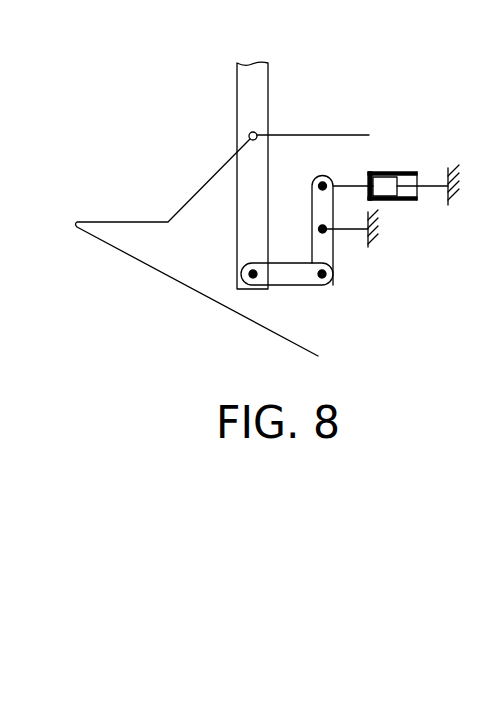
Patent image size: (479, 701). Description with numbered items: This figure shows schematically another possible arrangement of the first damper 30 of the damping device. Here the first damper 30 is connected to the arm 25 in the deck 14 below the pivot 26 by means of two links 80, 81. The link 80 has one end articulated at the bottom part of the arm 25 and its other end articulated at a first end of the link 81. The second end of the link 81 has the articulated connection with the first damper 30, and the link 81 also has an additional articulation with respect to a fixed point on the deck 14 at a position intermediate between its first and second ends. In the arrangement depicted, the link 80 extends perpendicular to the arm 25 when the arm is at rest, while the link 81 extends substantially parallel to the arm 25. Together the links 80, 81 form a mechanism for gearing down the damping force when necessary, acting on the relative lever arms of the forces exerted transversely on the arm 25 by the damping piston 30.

The deck 14 is at (190, 198).
The arm 25 is at (236, 75).
The pivot 26 is at (249, 133).
The first damper 30 is at (388, 172).
The link 80 is at (305, 287).
The link 81 is at (335, 253).